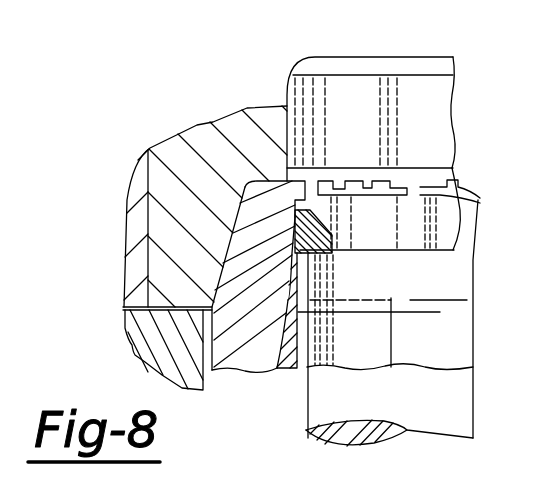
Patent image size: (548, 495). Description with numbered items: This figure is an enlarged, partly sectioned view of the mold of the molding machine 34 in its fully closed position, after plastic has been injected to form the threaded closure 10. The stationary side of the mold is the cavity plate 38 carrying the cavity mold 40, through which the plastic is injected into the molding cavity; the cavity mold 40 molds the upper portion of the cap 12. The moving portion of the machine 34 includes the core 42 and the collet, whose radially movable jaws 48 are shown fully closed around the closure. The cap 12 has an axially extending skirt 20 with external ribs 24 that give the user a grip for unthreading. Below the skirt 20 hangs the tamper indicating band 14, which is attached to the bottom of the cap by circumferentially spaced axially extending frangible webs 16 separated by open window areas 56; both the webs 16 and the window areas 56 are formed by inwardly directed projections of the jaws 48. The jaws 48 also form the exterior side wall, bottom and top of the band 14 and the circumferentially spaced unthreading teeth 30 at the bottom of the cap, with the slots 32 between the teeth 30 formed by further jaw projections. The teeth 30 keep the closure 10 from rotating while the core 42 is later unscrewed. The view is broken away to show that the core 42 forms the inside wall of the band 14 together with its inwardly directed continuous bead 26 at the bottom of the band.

The threaded closure 10 is at (453, 170).
The cap 12 is at (368, 59).
The tamper indicating band 14 is at (432, 197).
The frangible webs 16 is at (480, 201).
The skirt 20 is at (434, 108).
The external ribs 24 is at (273, 107).
The bead 26 is at (277, 368).
The unthreading teeth 30 is at (369, 183).
The slots 32 is at (388, 196).
The molding machine 34 is at (131, 173).
The cavity plate 38 is at (128, 240).
The cavity mold 40 is at (191, 130).
The core 42 is at (456, 405).
The collet jaws 48 is at (233, 290).
The open window areas 56 is at (340, 196).